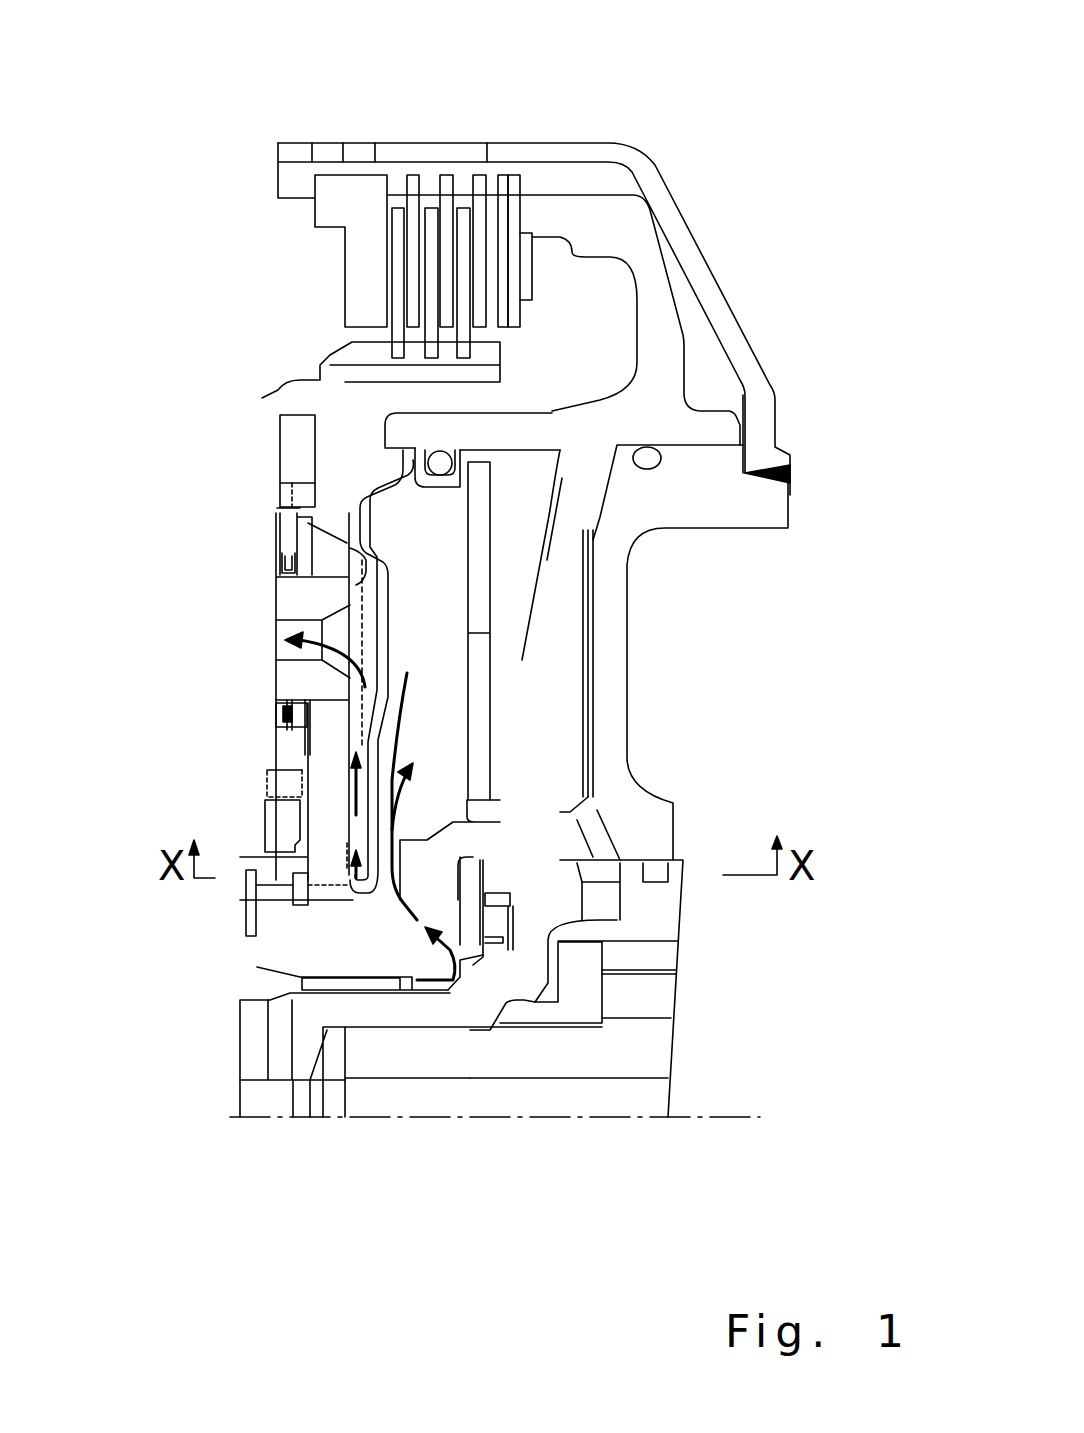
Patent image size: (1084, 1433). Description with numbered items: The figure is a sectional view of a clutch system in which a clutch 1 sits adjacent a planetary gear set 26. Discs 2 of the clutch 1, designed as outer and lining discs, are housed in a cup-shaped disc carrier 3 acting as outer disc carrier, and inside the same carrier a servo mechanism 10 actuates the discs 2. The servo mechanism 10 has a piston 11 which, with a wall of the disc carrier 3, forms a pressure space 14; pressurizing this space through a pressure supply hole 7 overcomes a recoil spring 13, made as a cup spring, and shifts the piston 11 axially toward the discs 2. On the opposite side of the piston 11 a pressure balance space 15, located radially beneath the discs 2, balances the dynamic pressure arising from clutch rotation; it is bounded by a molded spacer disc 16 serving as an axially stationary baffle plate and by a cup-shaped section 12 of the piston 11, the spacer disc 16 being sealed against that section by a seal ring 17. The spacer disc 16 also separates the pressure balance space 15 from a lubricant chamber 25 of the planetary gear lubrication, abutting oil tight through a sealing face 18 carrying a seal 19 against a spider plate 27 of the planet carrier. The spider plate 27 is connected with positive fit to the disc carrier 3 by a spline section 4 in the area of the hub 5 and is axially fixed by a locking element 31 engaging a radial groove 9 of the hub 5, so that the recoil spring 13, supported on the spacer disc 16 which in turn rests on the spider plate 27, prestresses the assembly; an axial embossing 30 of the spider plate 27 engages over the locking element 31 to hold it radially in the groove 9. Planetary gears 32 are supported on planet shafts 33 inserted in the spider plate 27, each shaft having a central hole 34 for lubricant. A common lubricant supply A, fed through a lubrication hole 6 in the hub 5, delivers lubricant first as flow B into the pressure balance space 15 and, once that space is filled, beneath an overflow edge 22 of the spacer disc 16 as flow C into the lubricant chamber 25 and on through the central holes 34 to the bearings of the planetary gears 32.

The clutch 1 is at (448, 125).
The discs 2 is at (462, 233).
The disc carrier 3 is at (712, 295).
The spline section 4 is at (337, 947).
The hub 5 is at (300, 1020).
The lubrication hole 6 is at (413, 920).
The pressure supply hole 7 is at (597, 828).
The radial groove 9 is at (340, 900).
The servo mechanism 10 is at (657, 290).
The piston 11 is at (675, 428).
The cup-shaped section 12 is at (507, 433).
The recoil spring 13 is at (480, 575).
The pressure space 14 is at (610, 503).
The pressure balance space 15 is at (440, 648).
The molded spacer disc 16 is at (373, 497).
The seal ring 17 is at (440, 463).
The sealing face 18 is at (347, 538).
The seal 19 is at (350, 577).
The overflow edge 22 is at (365, 905).
The lubricant chamber 25 is at (345, 698).
The planetary gear set 26 is at (252, 764).
The spider plate 27 is at (322, 740).
The axial embossing 30 is at (245, 895).
The locking element 31 is at (301, 911).
The planetary gears 32 is at (278, 530).
The planet shafts 33 is at (300, 603).
The central hole 34 is at (280, 648).
The common lubricant supply A is at (470, 970).
The lubricant flow into the pressure balance space B is at (365, 808).
The lubricant flow to the lubricant chamber C is at (291, 858).